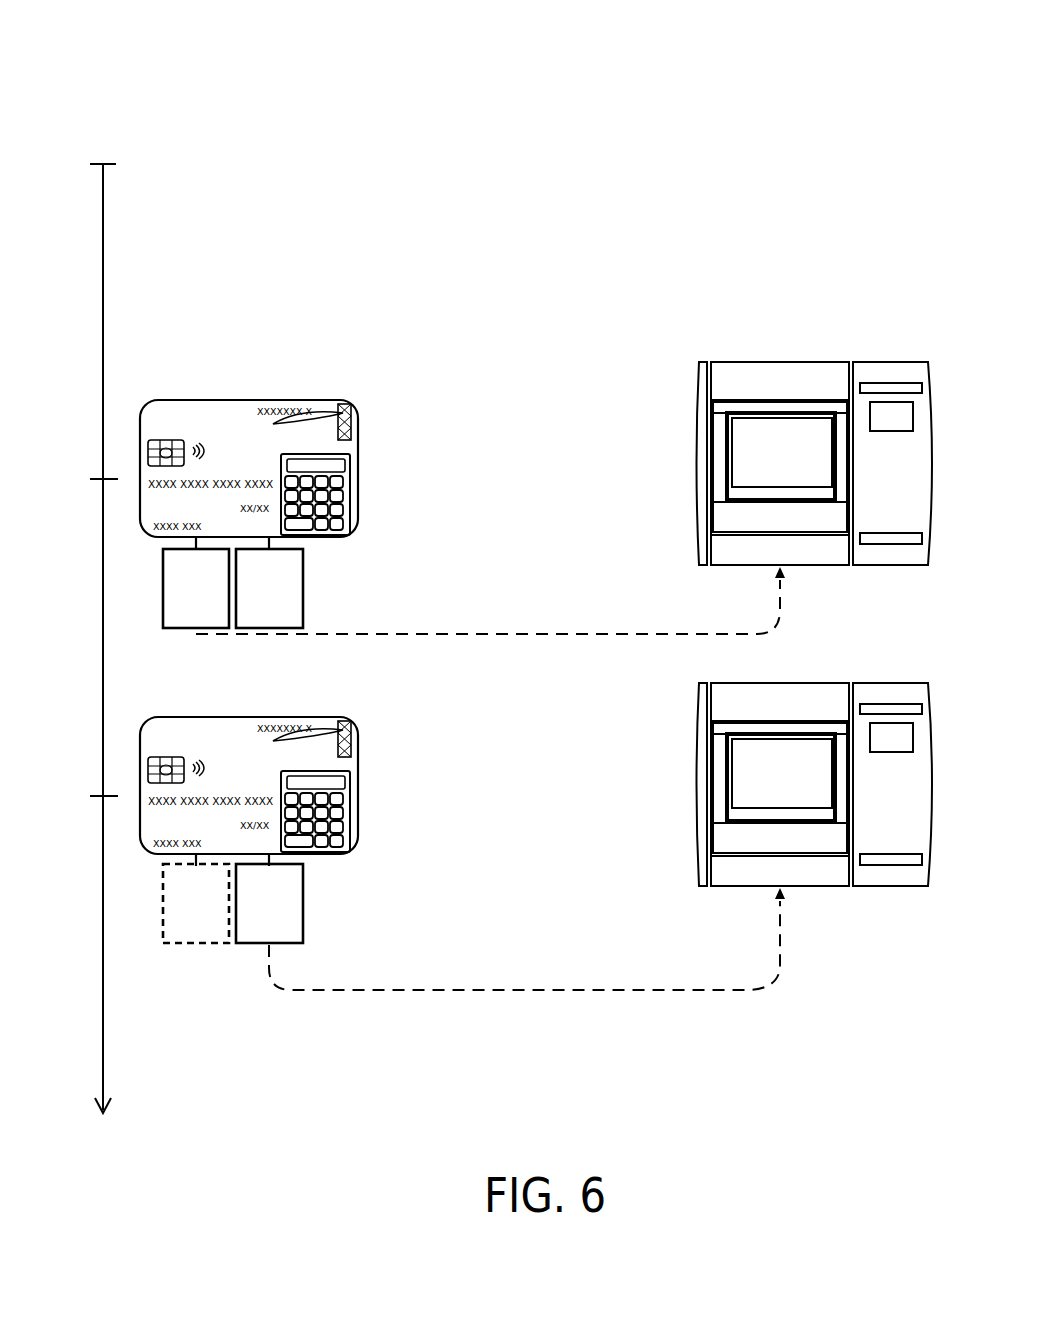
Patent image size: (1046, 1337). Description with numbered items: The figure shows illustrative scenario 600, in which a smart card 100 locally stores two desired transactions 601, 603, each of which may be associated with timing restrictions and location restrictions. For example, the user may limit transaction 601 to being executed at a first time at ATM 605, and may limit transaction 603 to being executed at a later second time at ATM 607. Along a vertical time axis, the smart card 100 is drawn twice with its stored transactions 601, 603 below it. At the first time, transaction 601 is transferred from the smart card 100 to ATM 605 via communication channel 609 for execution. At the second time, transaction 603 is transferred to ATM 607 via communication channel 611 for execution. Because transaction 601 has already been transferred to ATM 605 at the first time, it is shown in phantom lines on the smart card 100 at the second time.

The scenario 600 is at (150, 58).
The smart card 100 is at (248, 398).
The transaction 601 is at (176, 630).
The transaction 603 is at (304, 582).
The ATM 605 is at (865, 361).
The ATM 607 is at (866, 682).
The communication channel 609 is at (445, 636).
The communication channel 611 is at (493, 992).